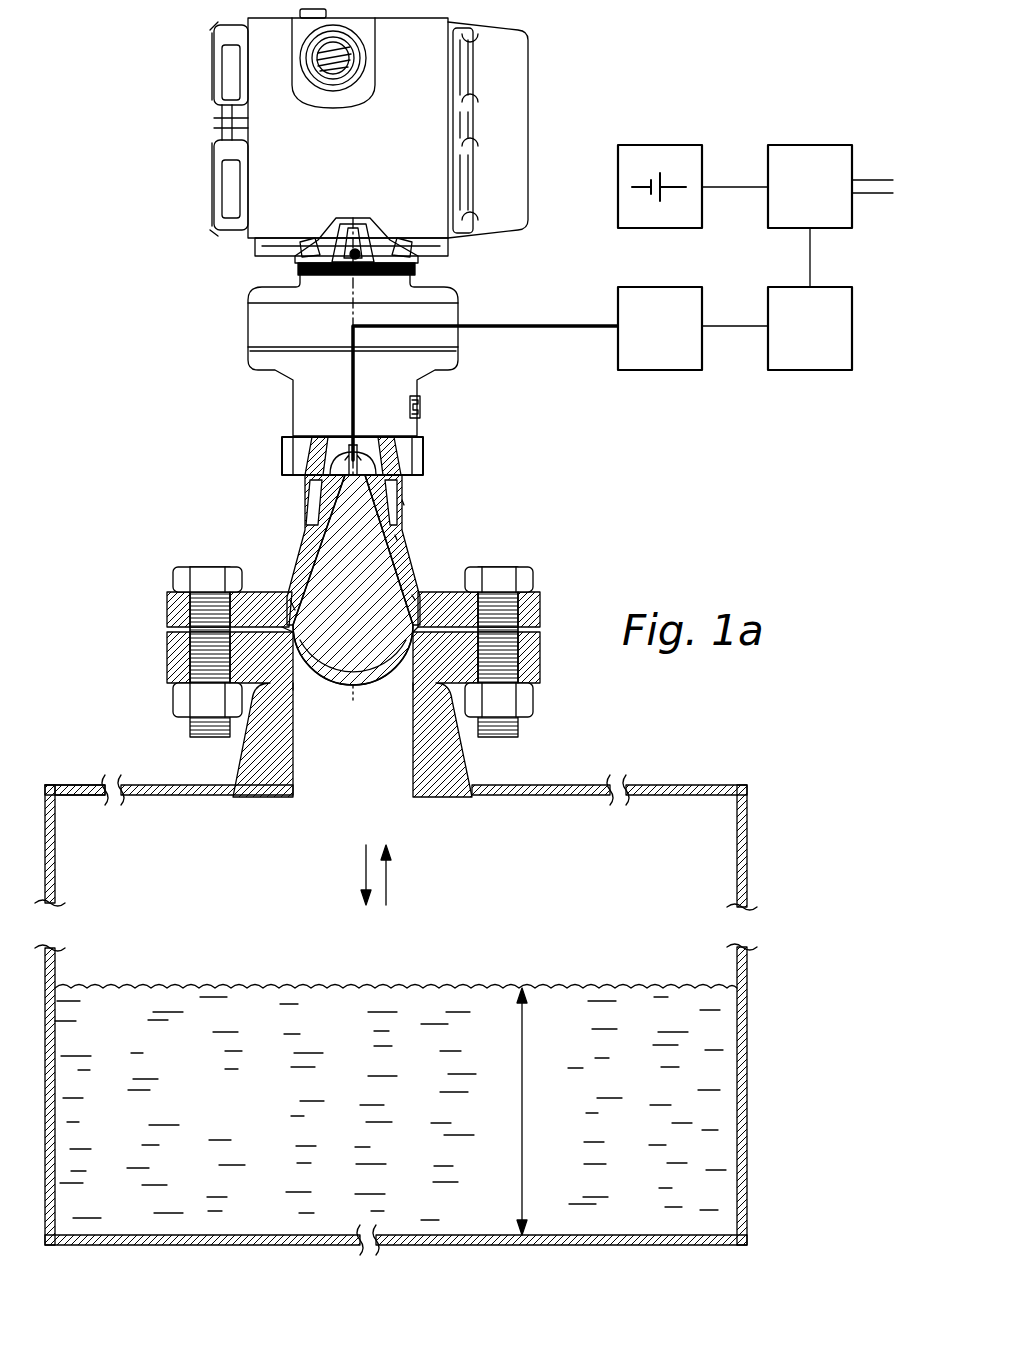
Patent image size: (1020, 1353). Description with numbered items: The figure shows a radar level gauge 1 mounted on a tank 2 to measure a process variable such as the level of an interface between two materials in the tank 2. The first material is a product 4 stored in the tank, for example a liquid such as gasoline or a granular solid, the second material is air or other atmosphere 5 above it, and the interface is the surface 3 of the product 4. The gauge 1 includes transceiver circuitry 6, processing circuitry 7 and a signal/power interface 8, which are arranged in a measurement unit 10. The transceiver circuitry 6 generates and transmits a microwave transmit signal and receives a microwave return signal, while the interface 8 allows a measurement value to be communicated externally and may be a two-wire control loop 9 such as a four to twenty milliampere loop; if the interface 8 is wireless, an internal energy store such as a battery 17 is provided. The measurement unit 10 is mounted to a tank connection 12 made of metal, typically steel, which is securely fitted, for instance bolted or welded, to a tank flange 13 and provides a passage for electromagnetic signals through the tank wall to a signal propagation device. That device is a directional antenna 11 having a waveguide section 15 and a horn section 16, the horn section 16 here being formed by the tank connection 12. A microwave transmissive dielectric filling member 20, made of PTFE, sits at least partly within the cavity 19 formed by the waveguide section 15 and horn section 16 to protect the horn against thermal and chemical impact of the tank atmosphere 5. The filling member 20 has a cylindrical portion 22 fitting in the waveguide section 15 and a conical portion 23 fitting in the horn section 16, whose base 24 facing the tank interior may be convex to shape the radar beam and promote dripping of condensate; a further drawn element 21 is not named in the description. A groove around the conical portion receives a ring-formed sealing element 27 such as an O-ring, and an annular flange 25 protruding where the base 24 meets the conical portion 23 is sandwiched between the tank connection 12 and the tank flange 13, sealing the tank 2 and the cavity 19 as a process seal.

The radar level gauge 1 is at (192, 281).
The tank 2 is at (748, 828).
The surface 3 is at (140, 986).
The product 4 is at (215, 1126).
The atmosphere 5 is at (220, 854).
The transceiver circuitry 6 is at (672, 368).
The processing circuitry 7 is at (805, 368).
The signal/power interface 8 is at (800, 150).
The two-wire control loop 9 is at (866, 181).
The measurement unit 10 is at (275, 368).
The directional antenna 11 is at (398, 540).
The tank connection 12 is at (300, 530).
The tank flange 13 is at (470, 770).
The waveguide section 15 is at (300, 468).
The horn section 16 is at (290, 590).
The battery 17 is at (652, 150).
The cavity 19 is at (415, 600).
The dielectric filling member 20 is at (405, 560).
The waveguide 21 is at (400, 510).
The cylindrical portion 22 is at (370, 463).
The conical portion 23 is at (296, 606).
The base 24 is at (342, 668).
The annular flange 25 is at (462, 592).
The sealing element 27 is at (406, 652).